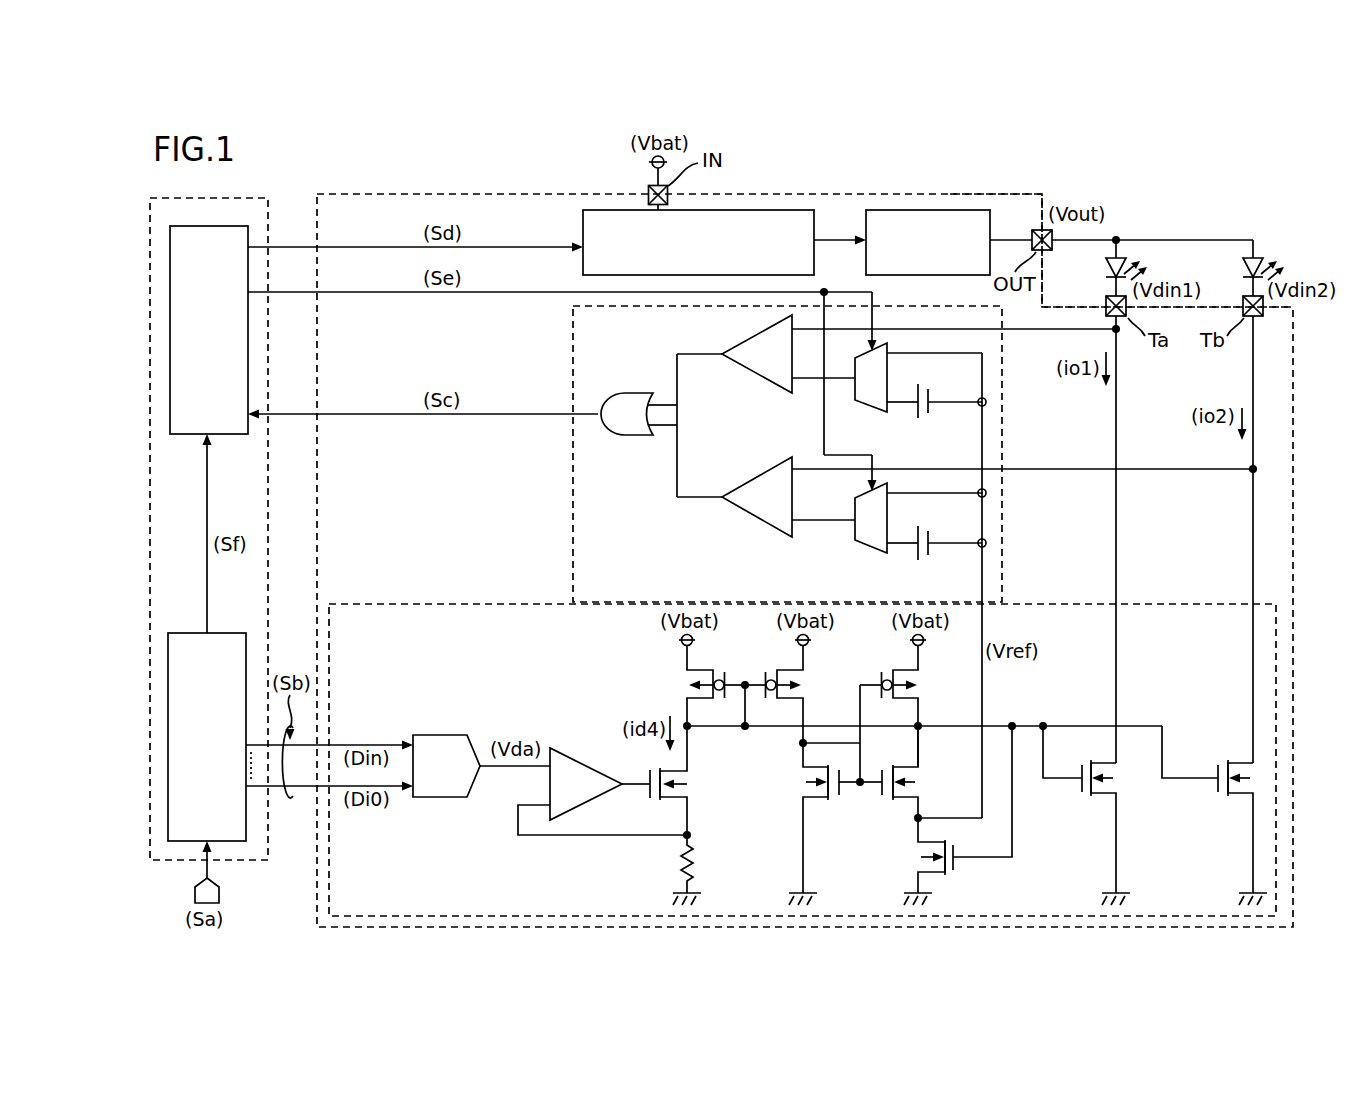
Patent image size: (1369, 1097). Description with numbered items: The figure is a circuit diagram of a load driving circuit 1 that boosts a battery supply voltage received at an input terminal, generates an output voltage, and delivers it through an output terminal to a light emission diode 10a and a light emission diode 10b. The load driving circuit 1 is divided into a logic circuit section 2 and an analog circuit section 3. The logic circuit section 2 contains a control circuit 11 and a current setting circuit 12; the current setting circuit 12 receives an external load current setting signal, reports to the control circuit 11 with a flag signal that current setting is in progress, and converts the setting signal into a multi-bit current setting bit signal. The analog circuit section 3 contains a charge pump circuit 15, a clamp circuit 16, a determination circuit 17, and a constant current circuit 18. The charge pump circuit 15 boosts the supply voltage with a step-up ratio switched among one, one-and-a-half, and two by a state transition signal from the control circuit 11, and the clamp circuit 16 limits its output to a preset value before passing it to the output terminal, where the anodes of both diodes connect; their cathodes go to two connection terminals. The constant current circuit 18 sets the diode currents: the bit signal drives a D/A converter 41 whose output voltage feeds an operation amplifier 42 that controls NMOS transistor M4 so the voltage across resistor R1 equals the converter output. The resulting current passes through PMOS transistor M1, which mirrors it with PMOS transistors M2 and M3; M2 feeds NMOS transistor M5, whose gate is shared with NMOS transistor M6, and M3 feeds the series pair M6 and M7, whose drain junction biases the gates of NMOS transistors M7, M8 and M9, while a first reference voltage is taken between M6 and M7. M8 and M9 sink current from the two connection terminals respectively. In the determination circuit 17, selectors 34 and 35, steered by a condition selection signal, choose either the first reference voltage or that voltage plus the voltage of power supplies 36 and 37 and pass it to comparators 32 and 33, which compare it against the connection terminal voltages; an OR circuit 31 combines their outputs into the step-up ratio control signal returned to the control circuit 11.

The load driving circuit 1 is at (849, 172).
The logic circuit section 2 is at (244, 193).
The analog circuit section 3 is at (956, 186).
The light emission diode 10a is at (1106, 268).
The light emission diode 10b is at (1243, 268).
The control circuit 11 is at (176, 436).
The current setting circuit 12 is at (176, 630).
The charge pump circuit 15 is at (583, 272).
The clamp circuit 16 is at (900, 276).
The determination circuit 17 is at (586, 333).
The constant current circuit 18 is at (405, 592).
The OR circuit 31 is at (640, 392).
The comparator 32 is at (748, 382).
The comparator 33 is at (748, 524).
The selector 34 is at (860, 412).
The selector 35 is at (860, 553).
The power supply 36 is at (930, 420).
The power supply 37 is at (930, 562).
The D/A converter 41 is at (455, 735).
The operation amplifier 42 is at (575, 760).
The PMOS transistor M1 is at (716, 686).
The PMOS transistor M2 is at (774, 695).
The PMOS transistor M3 is at (889, 707).
The NMOS transistor M4 is at (670, 782).
The NMOS transistor M5 is at (814, 818).
The NMOS transistor M6 is at (891, 774).
The NMOS transistor M7 is at (918, 855).
The NMOS transistor M8 is at (1099, 816).
The NMOS transistor M9 is at (1235, 816).
The resistor R1 is at (703, 864).